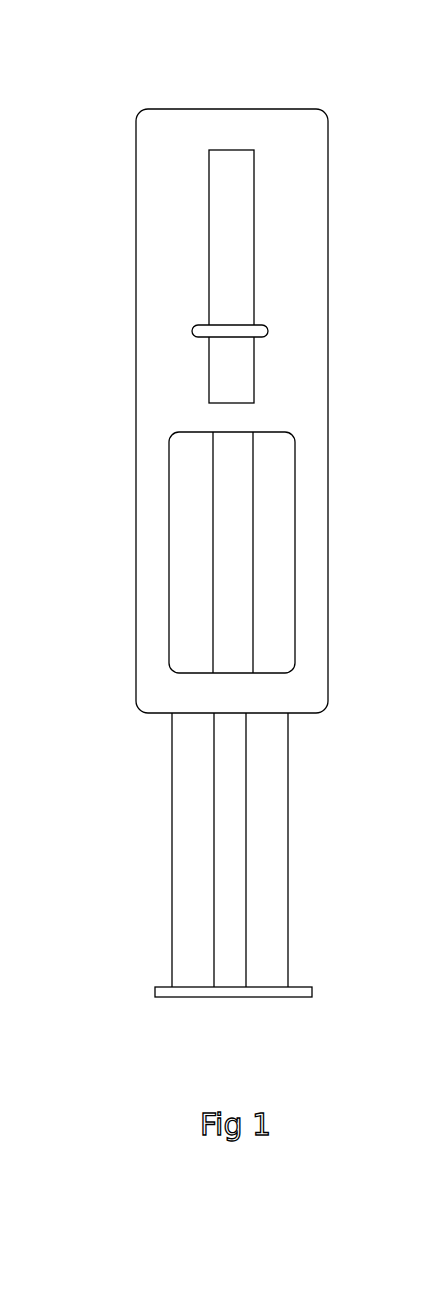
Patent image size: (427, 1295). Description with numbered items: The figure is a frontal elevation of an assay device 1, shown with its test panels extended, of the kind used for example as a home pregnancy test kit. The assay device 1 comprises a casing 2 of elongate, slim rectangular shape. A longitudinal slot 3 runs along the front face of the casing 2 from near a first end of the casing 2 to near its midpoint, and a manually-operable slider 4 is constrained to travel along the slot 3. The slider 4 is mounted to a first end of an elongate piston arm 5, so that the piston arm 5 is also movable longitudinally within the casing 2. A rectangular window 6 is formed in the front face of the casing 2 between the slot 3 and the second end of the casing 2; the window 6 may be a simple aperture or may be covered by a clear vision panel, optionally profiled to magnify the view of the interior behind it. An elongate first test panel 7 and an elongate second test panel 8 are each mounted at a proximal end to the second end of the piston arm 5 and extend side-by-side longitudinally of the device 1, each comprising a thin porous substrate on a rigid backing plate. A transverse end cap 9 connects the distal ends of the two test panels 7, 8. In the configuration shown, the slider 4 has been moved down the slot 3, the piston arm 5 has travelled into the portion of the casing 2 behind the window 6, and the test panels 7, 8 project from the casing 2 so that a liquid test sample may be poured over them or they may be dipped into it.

The assay device 1 is at (88, 124).
The casing 2 is at (290, 258).
The longitudinal slot 3 is at (230, 290).
The manually-operable slider 4 is at (267, 330).
The piston arm 5 is at (235, 495).
The rectangular window 6 is at (188, 605).
The first test panel 7 is at (188, 793).
The second test panel 8 is at (272, 802).
The transverse end cap 9 is at (302, 997).